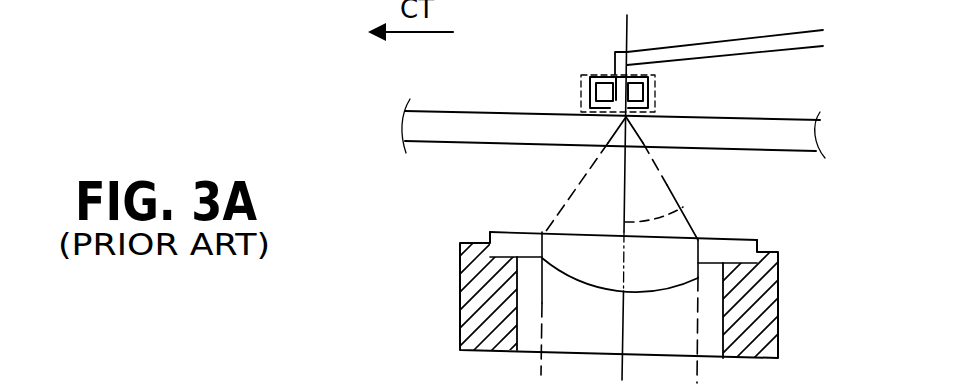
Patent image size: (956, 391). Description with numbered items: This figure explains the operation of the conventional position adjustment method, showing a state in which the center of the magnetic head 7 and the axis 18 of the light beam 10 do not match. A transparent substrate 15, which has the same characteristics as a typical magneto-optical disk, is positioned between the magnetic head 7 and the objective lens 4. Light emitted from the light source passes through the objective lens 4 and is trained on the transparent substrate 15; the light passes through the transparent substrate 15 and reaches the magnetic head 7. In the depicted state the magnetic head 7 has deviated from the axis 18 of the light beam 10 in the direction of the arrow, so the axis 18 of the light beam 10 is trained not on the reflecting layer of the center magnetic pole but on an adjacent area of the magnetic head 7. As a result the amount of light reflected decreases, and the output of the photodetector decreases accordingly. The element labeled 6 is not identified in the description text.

The objective lens 4 is at (565, 242).
The lens holder 6 is at (766, 309).
The magnetic head 7 is at (582, 86).
The light beam 10 is at (643, 171).
The transparent substrate 15 is at (805, 137).
The axis of the light beam 18 is at (686, 208).